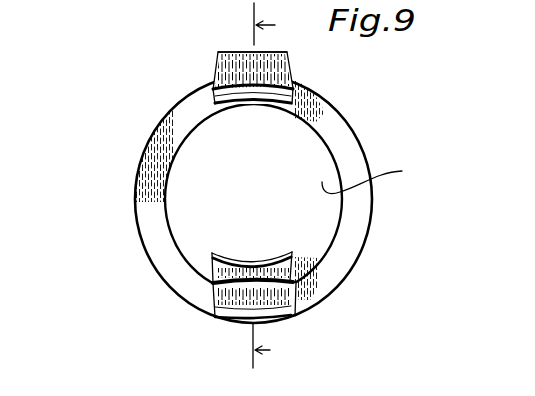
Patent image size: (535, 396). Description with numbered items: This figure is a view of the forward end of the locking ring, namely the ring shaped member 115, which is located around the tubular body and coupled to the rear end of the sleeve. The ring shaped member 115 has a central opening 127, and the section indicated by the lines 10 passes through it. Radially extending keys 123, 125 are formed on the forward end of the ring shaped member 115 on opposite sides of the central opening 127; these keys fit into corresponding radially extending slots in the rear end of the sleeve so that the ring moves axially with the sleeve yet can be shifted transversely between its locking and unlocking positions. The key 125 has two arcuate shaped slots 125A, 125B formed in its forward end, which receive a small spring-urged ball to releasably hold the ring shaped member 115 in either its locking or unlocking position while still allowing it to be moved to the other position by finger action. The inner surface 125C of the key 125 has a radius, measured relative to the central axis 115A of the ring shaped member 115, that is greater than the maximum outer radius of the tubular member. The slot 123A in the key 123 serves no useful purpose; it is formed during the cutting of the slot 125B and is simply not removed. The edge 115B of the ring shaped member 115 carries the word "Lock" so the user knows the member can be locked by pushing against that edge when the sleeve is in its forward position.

The section line 10- 10 is at (278, 185).
The ring shaped member 115 is at (364, 240).
The central axis 115A is at (257, 193).
The edge 115B is at (217, 53).
The key 123 is at (213, 78).
The slot 123A is at (273, 88).
The key 125 is at (210, 286).
The arcuate shaped slot 125A is at (215, 266).
The arcuate shaped slot 125B is at (291, 290).
The inner surface 125C is at (257, 263).
The central opening 127 is at (381, 176).